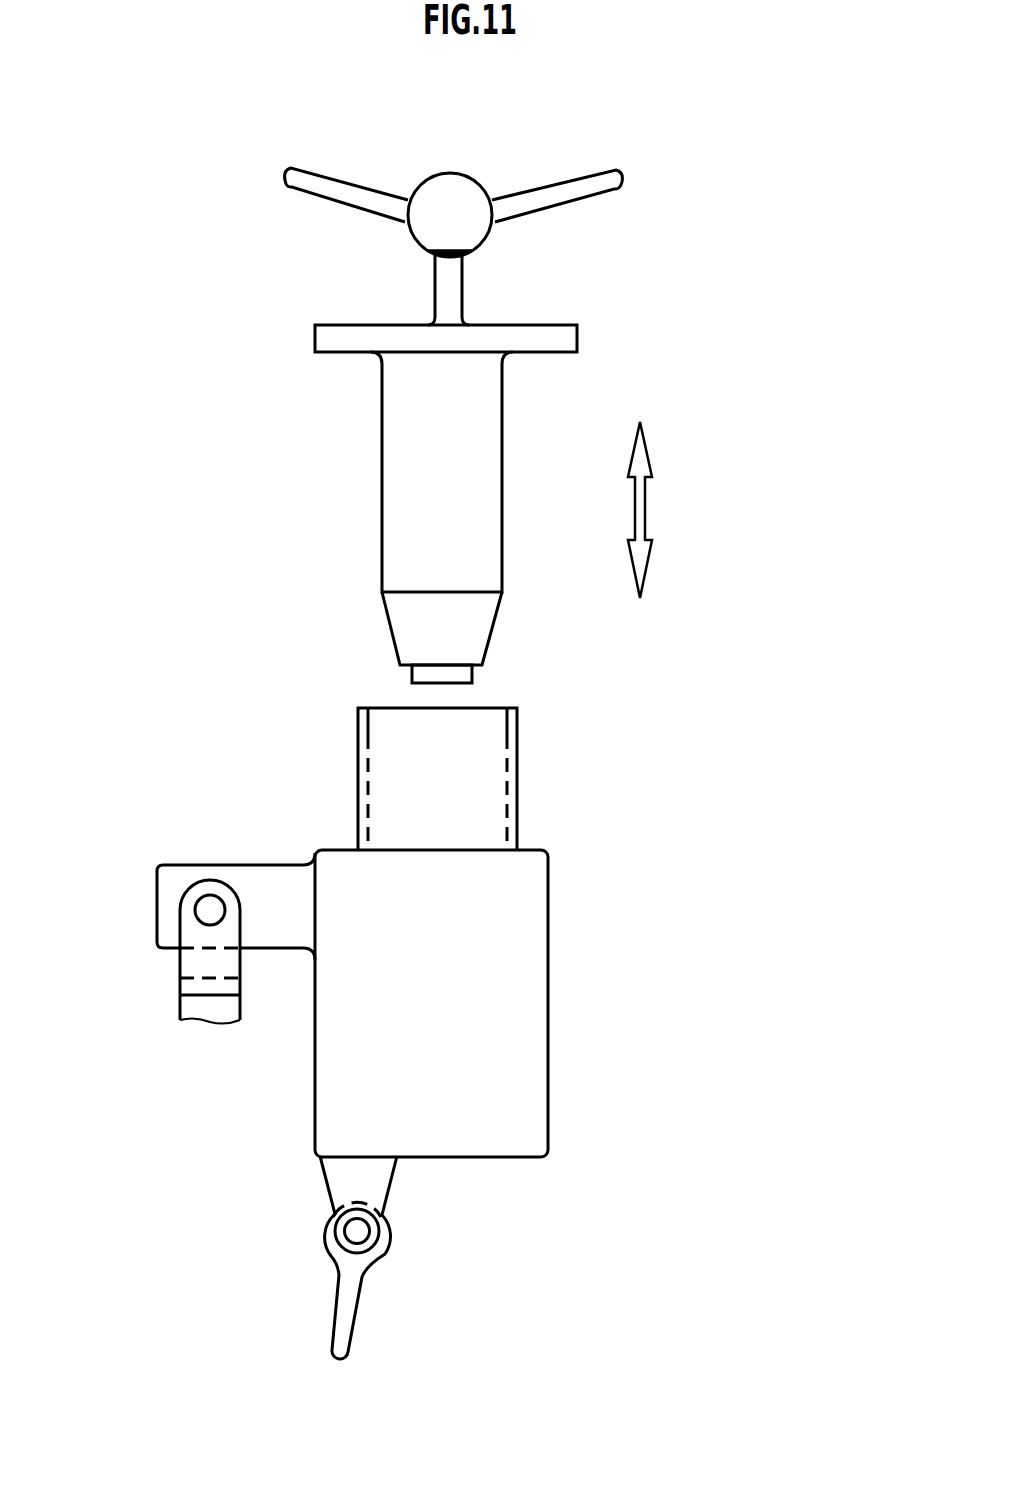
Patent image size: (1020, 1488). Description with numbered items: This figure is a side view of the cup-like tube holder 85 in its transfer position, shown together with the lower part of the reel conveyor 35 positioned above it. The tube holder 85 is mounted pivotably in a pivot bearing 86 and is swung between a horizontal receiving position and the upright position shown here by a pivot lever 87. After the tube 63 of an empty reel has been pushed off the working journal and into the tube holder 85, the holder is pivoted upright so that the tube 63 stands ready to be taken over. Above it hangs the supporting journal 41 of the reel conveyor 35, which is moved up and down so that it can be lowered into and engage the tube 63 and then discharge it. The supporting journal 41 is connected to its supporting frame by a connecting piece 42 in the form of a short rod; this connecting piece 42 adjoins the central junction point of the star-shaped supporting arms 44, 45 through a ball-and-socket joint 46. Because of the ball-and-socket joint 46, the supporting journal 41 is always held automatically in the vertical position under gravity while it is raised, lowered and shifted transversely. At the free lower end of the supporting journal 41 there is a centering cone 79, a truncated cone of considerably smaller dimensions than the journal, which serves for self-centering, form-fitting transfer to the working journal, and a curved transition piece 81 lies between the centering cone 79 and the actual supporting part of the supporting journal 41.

The reel conveyor 35 is at (738, 198).
The supporting journal 41 is at (490, 478).
The connecting piece 42 is at (464, 286).
The supporting arm 44 is at (562, 205).
The supporting arm 45 is at (340, 196).
The ball-and-socket joint 46 is at (410, 238).
The tube 63 is at (509, 763).
The centering cone 79 is at (474, 678).
The curved transition piece 81 is at (497, 625).
The tube holder 85 is at (563, 975).
The pivot bearing 86 is at (168, 980).
The pivot lever 87 is at (348, 1308).